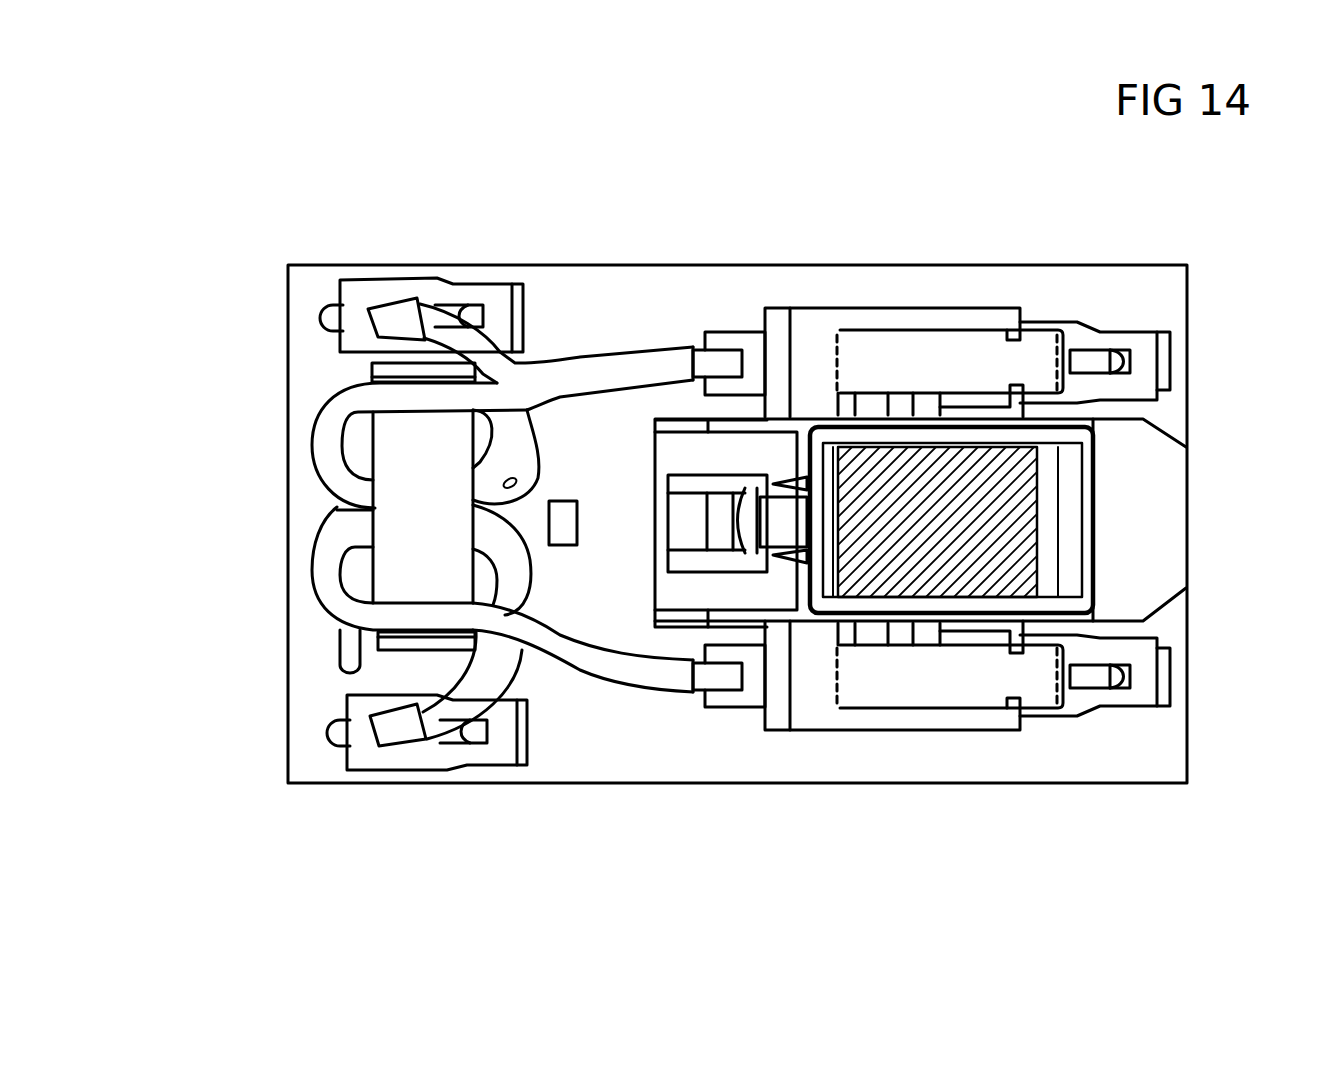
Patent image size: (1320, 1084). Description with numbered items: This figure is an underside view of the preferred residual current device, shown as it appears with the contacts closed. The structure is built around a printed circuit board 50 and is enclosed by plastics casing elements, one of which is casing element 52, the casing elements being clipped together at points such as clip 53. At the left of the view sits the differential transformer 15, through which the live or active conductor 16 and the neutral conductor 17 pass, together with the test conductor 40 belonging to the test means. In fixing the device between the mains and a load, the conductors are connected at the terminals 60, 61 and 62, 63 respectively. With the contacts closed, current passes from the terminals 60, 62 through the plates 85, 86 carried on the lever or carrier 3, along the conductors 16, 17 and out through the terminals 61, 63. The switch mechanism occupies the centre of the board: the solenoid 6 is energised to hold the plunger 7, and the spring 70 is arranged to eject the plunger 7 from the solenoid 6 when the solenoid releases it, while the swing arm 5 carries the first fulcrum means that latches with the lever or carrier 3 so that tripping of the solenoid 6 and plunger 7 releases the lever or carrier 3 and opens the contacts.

The contact lever or carrier 3 is at (992, 318).
The swing arm 5 is at (720, 520).
The solenoid 6 is at (1035, 473).
The plunger 7 is at (788, 520).
The differential transformer 15 is at (418, 553).
The live or active conductor 16 is at (588, 366).
The neutral conductor 17 is at (608, 673).
The test conductor 40 is at (335, 512).
The printed circuit board 50 is at (930, 272).
The plastics casing element 52 is at (1150, 572).
The clip 53 is at (565, 515).
The terminal 60 is at (1142, 340).
The terminal 61 is at (363, 293).
The terminal 62 is at (1150, 683).
The terminal 63 is at (361, 750).
The spring 70 is at (787, 545).
The plate 85 is at (923, 360).
The plate 86 is at (952, 677).